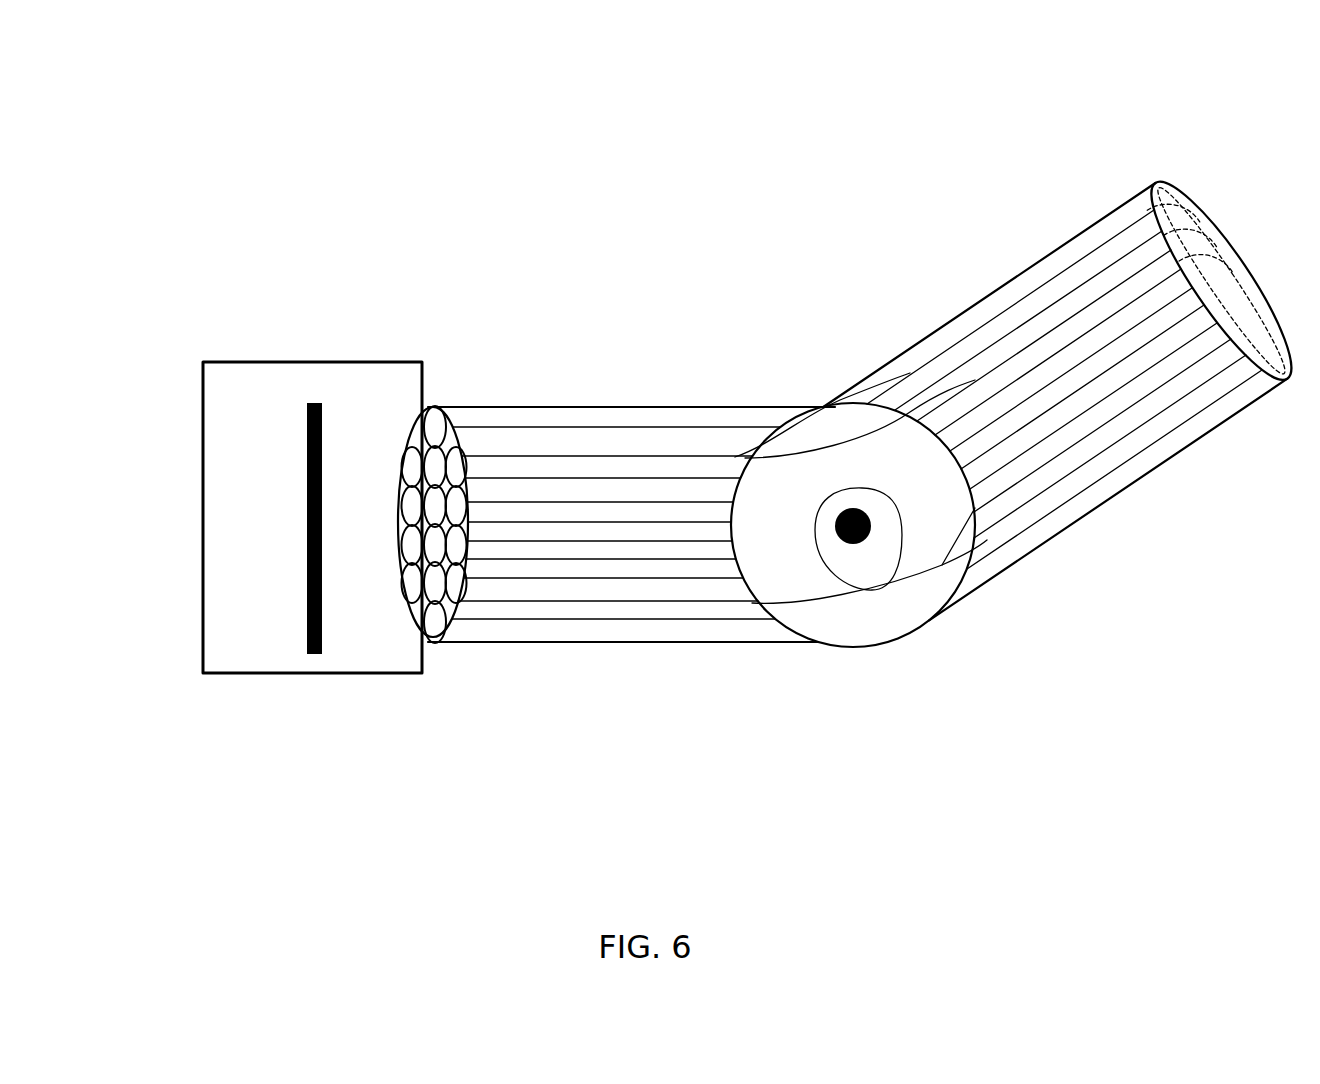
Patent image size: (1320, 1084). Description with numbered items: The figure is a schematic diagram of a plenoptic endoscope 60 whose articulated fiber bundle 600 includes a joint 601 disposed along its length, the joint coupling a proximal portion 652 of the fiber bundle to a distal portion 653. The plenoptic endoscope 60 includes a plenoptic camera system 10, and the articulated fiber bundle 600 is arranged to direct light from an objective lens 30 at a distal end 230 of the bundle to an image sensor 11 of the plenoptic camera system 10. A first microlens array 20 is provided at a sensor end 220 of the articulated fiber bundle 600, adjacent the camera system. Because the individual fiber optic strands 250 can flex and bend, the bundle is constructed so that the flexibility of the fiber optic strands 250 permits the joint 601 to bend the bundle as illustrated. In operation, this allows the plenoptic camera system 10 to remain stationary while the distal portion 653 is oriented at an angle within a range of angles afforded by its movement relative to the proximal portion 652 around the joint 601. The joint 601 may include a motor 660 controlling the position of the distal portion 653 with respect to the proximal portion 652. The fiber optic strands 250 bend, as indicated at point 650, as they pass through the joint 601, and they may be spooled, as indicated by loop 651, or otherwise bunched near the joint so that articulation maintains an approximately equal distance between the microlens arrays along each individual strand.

The plenoptic endoscope 60 is at (424, 132).
The plenoptic camera system 10 is at (287, 342).
The image sensor 11 is at (308, 598).
The first microlens array 20 is at (430, 420).
The articulated fiber bundle 600 is at (722, 228).
The sensor end 220 is at (448, 697).
The distal end 230 is at (1271, 447).
The fiber optic strands 250 is at (590, 620).
The objective lens 30 is at (1193, 242).
The point 650 is at (800, 450).
The loop 651 is at (942, 565).
The proximal portion 652 is at (432, 403).
The distal portion 653 is at (1132, 187).
The joint 601 is at (918, 632).
The motor 660 is at (851, 547).